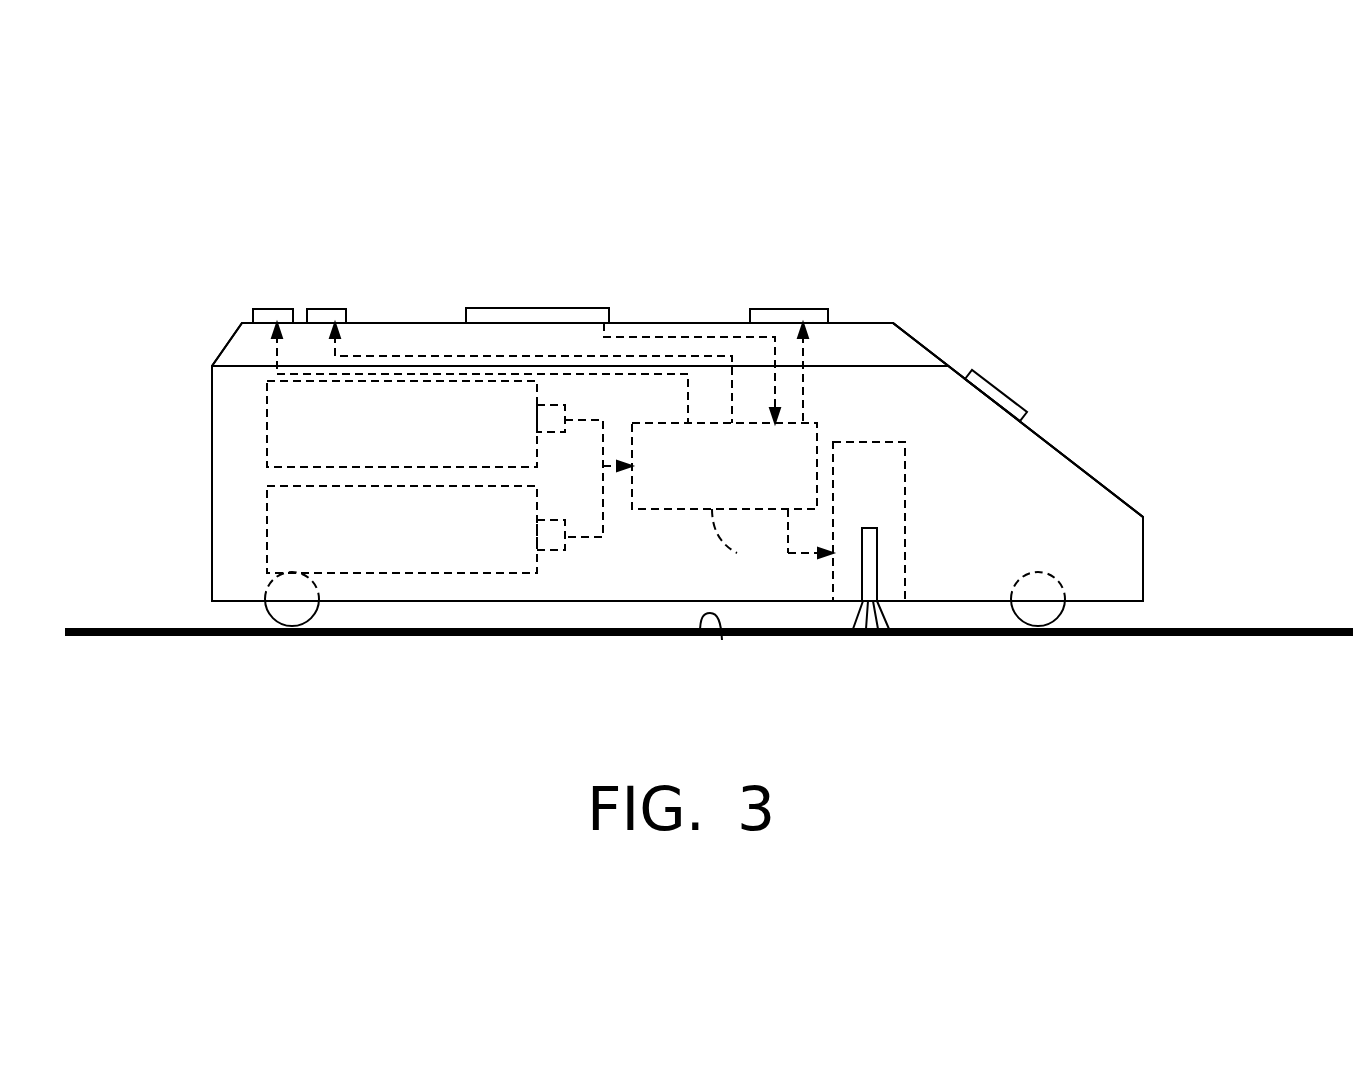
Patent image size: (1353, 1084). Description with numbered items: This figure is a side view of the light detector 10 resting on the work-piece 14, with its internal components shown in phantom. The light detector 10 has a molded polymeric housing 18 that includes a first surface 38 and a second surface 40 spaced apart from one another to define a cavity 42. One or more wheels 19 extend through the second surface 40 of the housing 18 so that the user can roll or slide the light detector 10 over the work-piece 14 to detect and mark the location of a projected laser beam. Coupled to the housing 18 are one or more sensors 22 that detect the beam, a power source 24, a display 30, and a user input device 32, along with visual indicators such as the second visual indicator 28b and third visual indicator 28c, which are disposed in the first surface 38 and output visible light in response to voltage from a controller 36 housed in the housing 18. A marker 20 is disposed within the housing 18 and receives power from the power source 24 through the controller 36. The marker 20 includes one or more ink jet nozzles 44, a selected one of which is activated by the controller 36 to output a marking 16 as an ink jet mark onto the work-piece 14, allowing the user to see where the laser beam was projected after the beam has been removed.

The light detector 10 is at (1176, 479).
The work-piece 14 is at (1232, 637).
The marking 16 is at (722, 640).
The housing 18 is at (917, 328).
The wheels 19 is at (292, 617).
The marker 20 is at (914, 540).
The sensors 22 is at (1010, 378).
The power source 24 is at (240, 475).
The second visual indicator 28b is at (270, 309).
The third visual indicator 28c is at (320, 309).
The display 30 is at (803, 296).
The user input device 32 is at (477, 308).
The controller 36 is at (732, 500).
The first surface 38 is at (642, 323).
The second surface 40 is at (662, 601).
The cavity 42 is at (1060, 473).
The ink jet nozzles 44 is at (860, 594).